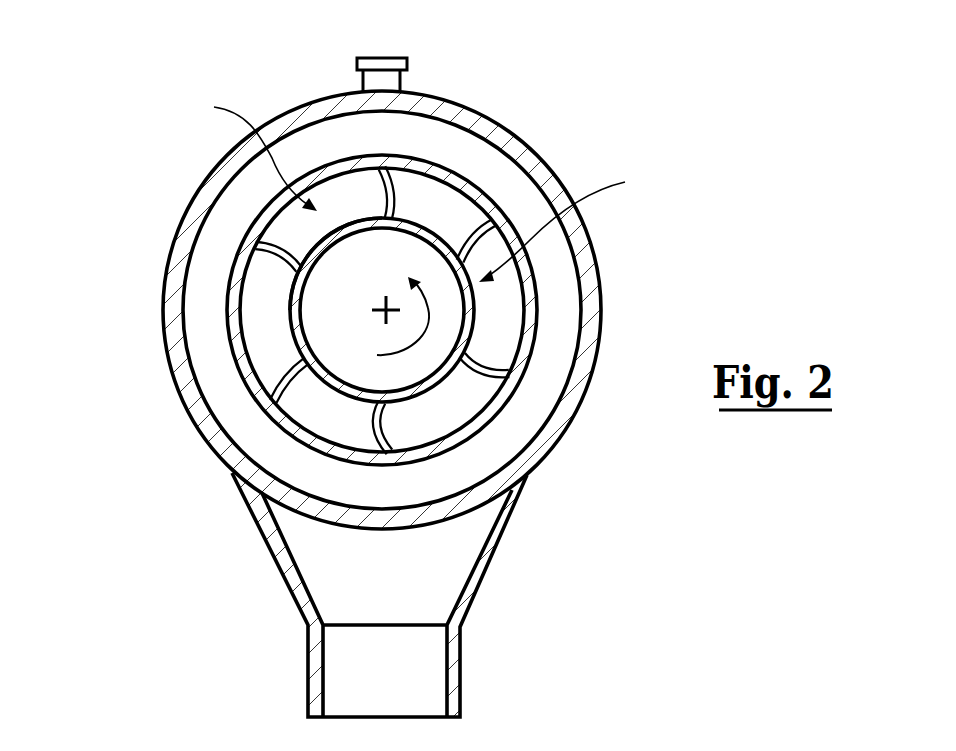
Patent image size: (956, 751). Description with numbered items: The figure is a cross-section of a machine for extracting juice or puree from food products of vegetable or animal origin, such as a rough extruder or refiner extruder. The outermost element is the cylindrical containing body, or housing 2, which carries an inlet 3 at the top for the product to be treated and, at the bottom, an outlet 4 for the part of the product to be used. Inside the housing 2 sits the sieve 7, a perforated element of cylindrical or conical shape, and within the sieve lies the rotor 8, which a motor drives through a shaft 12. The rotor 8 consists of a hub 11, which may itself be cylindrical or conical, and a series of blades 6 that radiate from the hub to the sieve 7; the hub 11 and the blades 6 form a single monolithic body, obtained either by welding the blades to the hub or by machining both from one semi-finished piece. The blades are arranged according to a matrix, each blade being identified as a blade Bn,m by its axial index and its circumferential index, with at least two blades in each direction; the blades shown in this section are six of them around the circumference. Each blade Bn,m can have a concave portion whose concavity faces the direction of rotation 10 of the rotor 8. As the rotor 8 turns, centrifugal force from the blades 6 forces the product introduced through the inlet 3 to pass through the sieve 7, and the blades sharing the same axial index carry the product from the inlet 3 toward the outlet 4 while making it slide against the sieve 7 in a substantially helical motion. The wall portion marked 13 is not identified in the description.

The housing 2 is at (186, 207).
The inlet 3 is at (362, 82).
The outlet 4 is at (461, 680).
The blades 6 is at (468, 247).
The sieve 7 is at (252, 376).
The rotor 8 is at (251, 147).
The direction of rotation 10 is at (400, 353).
The hub 11 is at (568, 221).
The shaft 12 is at (448, 316).
The hub wall 13 is at (292, 330).
The blade of the matrix Bn,m is at (380, 169).